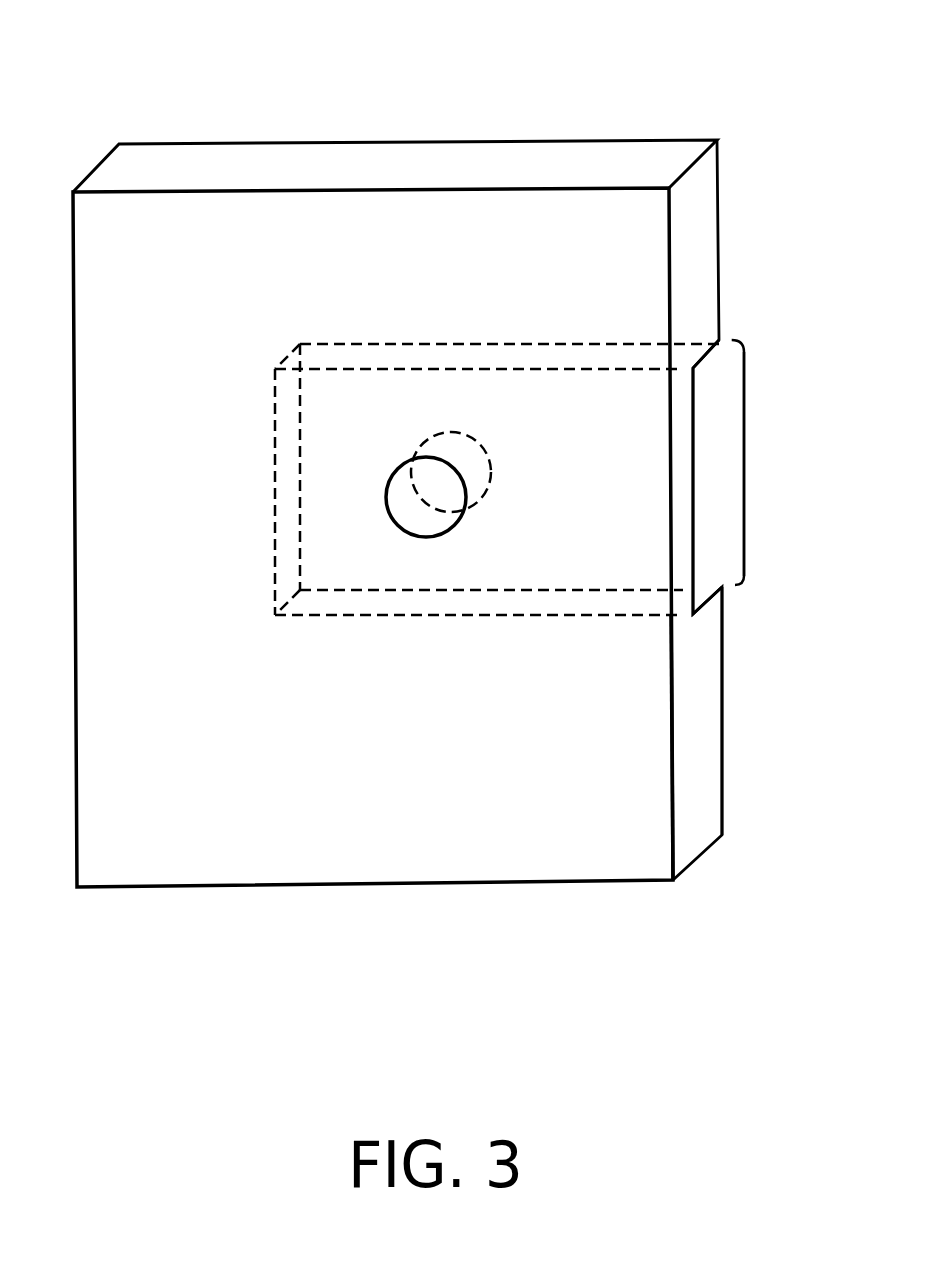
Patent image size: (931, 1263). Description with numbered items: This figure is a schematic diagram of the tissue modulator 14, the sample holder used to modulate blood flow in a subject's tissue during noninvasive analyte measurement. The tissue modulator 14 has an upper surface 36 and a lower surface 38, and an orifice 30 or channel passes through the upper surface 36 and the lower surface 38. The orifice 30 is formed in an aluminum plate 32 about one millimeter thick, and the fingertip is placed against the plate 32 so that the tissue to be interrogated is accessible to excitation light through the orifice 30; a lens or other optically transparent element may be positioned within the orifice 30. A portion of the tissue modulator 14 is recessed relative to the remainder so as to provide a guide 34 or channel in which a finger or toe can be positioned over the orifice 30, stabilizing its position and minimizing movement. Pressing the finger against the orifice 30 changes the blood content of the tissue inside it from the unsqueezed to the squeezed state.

The tissue modulator 14 is at (642, 157).
The orifice 30 is at (388, 552).
The aluminum plate 32 is at (683, 435).
The guide 34 is at (744, 482).
The upper surface 36 is at (723, 758).
The lower surface 38 is at (675, 685).